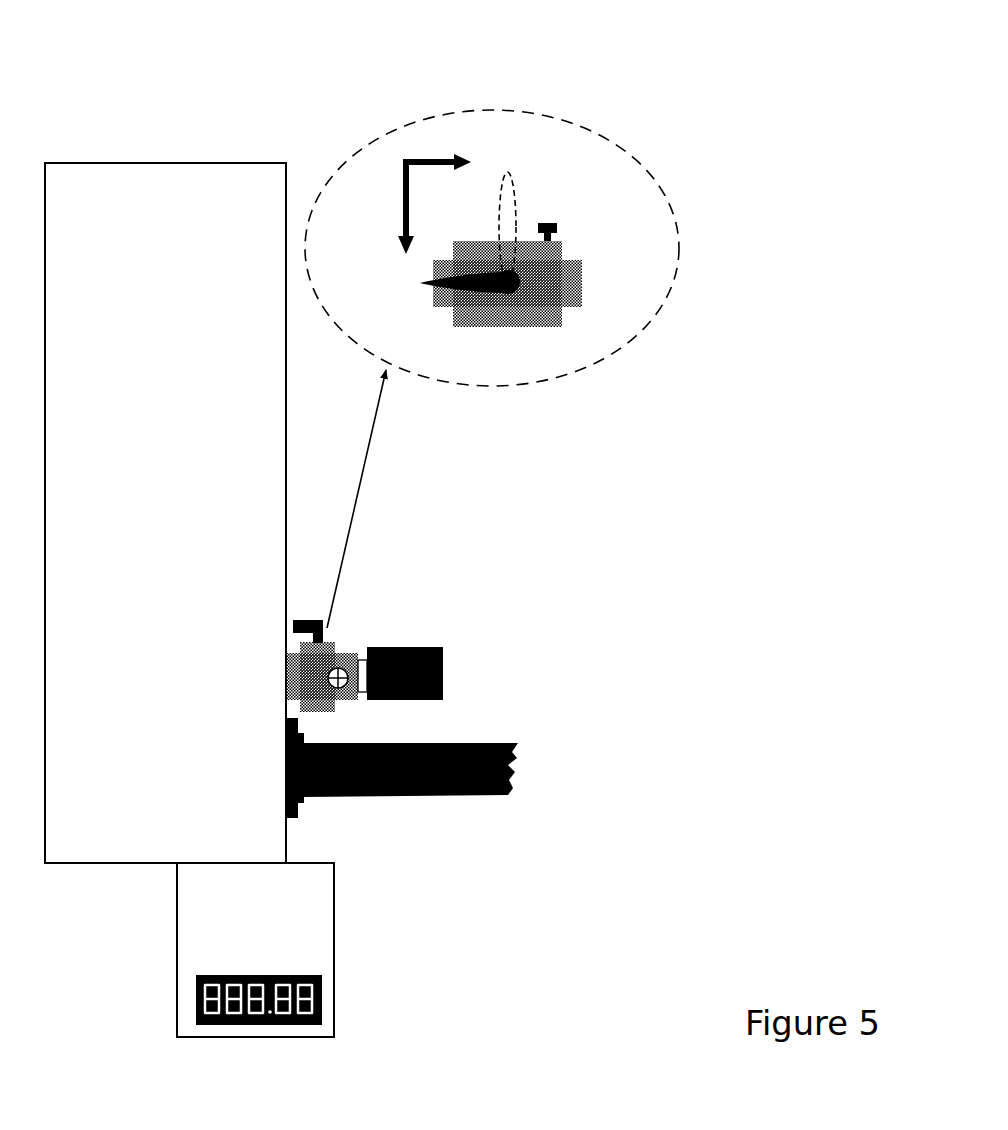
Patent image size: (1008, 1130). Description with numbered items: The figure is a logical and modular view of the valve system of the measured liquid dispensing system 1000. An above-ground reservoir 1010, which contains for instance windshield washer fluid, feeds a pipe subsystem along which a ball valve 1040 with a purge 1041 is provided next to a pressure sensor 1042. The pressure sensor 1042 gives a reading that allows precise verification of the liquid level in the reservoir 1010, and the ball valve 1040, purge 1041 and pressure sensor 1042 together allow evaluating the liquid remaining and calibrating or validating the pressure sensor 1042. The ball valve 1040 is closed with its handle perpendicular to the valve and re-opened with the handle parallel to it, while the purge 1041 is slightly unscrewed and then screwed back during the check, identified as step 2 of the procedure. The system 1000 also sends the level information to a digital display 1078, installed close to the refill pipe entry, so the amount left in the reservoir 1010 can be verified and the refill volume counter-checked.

The system 1000 is at (227, 100).
The above-ground reservoir 1010 is at (209, 555).
The ball valve 1040 is at (540, 375).
The purge 1041 is at (337, 640).
The pressure sensor 1042 is at (443, 672).
The digital display 1078 is at (177, 948).
The valve detail view 2 is at (492, 369).